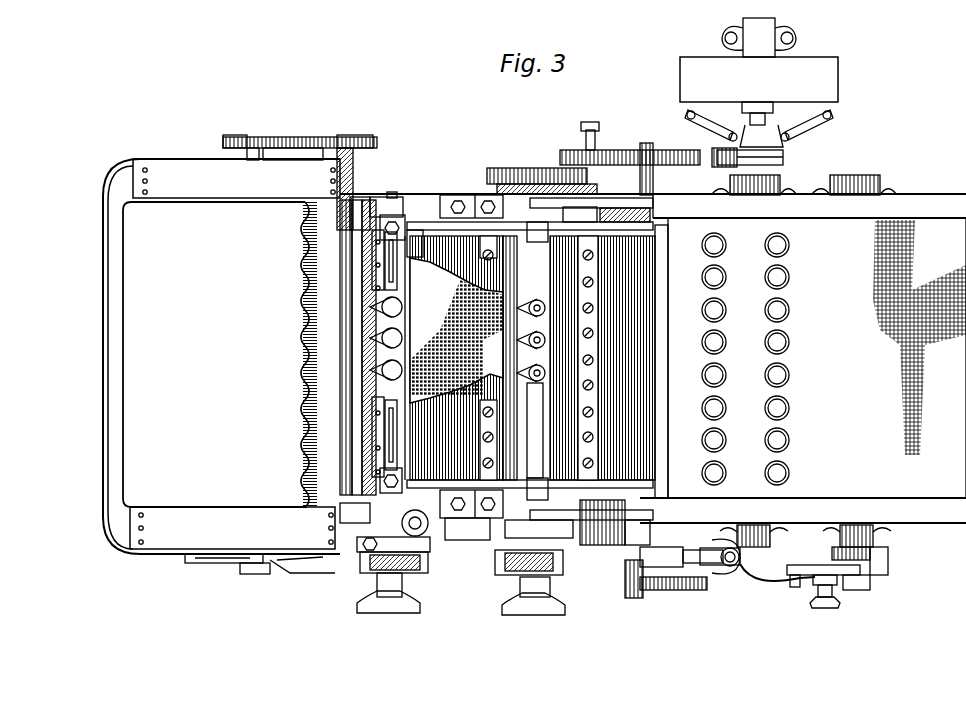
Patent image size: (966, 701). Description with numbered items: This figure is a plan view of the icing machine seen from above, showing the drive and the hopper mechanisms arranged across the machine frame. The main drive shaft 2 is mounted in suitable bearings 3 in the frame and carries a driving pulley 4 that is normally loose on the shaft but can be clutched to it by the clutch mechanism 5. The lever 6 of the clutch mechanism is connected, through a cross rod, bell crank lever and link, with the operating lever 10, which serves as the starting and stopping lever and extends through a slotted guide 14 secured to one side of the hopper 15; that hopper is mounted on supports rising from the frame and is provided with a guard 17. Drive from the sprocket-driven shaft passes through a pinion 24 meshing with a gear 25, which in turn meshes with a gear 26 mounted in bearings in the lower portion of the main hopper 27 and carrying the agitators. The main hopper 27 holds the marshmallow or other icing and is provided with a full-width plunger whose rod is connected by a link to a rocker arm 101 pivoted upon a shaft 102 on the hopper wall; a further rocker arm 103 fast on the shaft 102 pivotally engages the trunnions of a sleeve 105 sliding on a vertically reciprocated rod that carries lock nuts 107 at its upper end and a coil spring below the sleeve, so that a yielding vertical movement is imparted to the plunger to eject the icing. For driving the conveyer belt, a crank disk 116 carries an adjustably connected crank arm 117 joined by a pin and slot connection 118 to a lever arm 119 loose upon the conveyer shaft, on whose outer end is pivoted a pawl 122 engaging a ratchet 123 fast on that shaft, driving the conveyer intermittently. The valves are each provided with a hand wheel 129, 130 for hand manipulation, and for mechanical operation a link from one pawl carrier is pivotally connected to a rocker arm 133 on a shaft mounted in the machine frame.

The main drive shaft 2 is at (760, 118).
The bearings 3 is at (786, 147).
The driving pulley 4 is at (819, 64).
The clutch mechanism 5 is at (392, 194).
The lever 6 is at (786, 161).
The operating lever 10 is at (244, 566).
The slotted guide 14 is at (213, 556).
The hopper 15 is at (190, 198).
The guard 17 is at (103, 363).
The pinion 24 is at (597, 173).
The gear 25 is at (574, 180).
The gear 26 is at (522, 176).
The main hopper 27 is at (653, 402).
The rocker arm 101 is at (523, 530).
The shaft 102 is at (653, 453).
The rocker arm 103 is at (658, 547).
The sleeve 105 is at (755, 580).
The lock nuts 107 is at (740, 557).
The crank disk 116 is at (627, 580).
The crank arm 117 is at (660, 592).
The pin and slot connection 118 is at (822, 608).
The lever arm 119 is at (803, 567).
The pawl 122 is at (890, 556).
The ratchet 123 is at (860, 577).
The hand wheel 129 is at (410, 613).
The hand wheel 130 is at (520, 614).
The rocker arm 133 is at (583, 552).